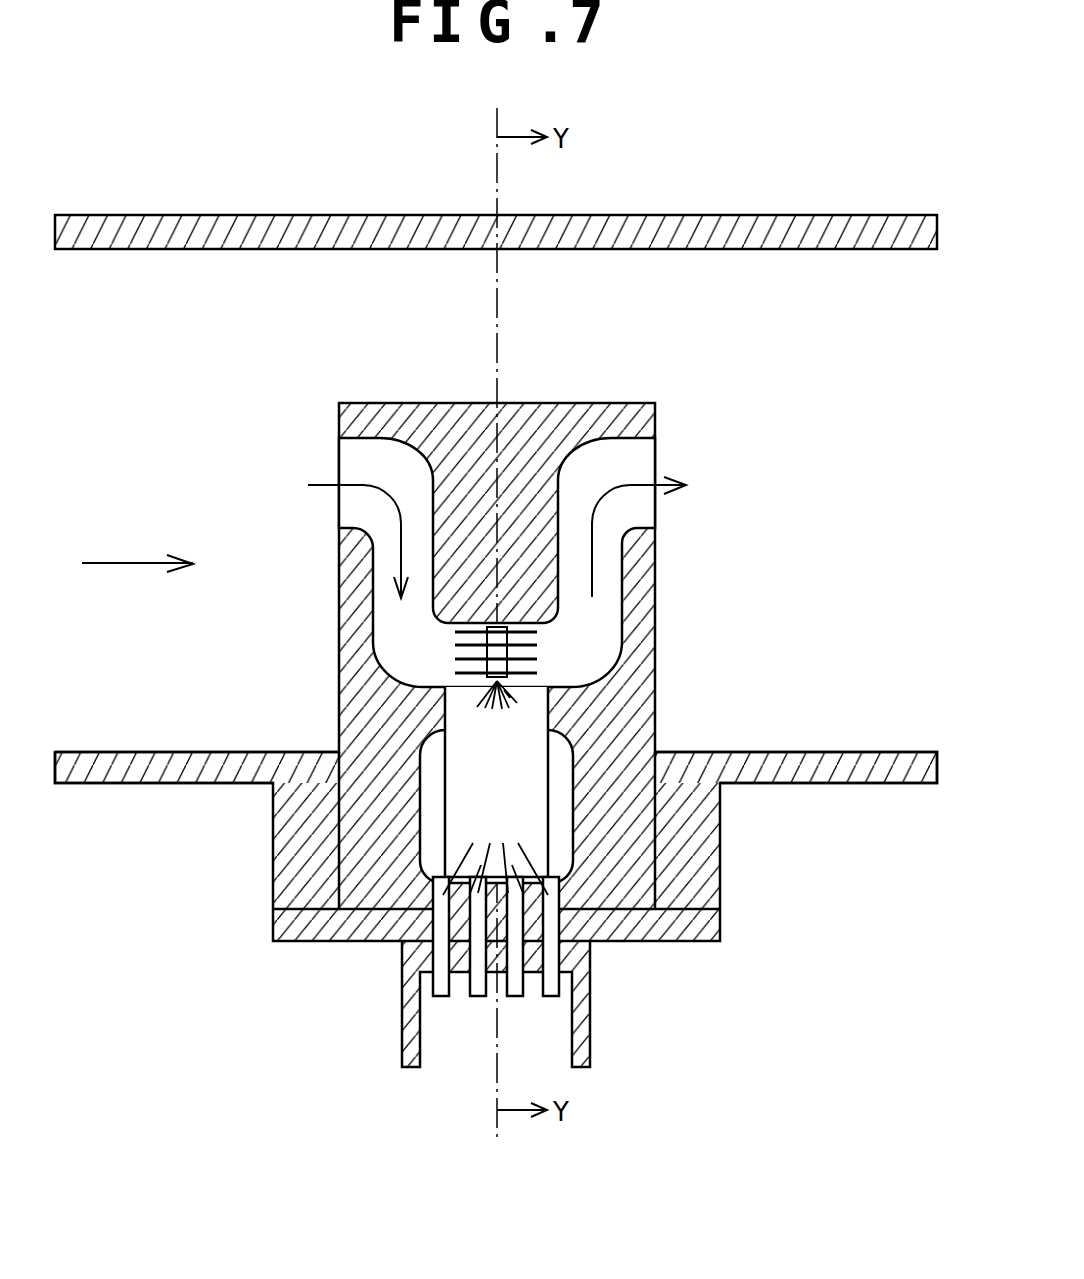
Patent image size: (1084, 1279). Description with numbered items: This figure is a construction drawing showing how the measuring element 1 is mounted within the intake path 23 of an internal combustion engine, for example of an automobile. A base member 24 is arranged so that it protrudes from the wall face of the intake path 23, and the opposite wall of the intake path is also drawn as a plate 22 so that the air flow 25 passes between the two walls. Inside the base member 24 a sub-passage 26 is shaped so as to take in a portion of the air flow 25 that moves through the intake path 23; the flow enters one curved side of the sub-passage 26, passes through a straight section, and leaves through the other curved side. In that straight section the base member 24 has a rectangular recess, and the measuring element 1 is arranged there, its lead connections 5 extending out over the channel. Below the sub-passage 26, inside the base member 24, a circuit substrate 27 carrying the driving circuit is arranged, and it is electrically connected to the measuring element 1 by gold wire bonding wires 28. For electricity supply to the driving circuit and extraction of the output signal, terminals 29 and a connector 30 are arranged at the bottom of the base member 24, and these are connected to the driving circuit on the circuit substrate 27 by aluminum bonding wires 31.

The measuring element 1 is at (507, 638).
The lead wires 5 is at (490, 637).
The upper plate 22 is at (240, 216).
The intake path 23 is at (118, 752).
The base member 24 is at (372, 752).
The air flow 25 is at (122, 563).
The sub-passage 26 is at (378, 462).
The circuit substrate 27 is at (537, 800).
The gold wire bonding wires 28 is at (517, 700).
The terminals 29 is at (478, 987).
The connector 30 is at (403, 1027).
The aluminum bonding wires 31 is at (470, 848).